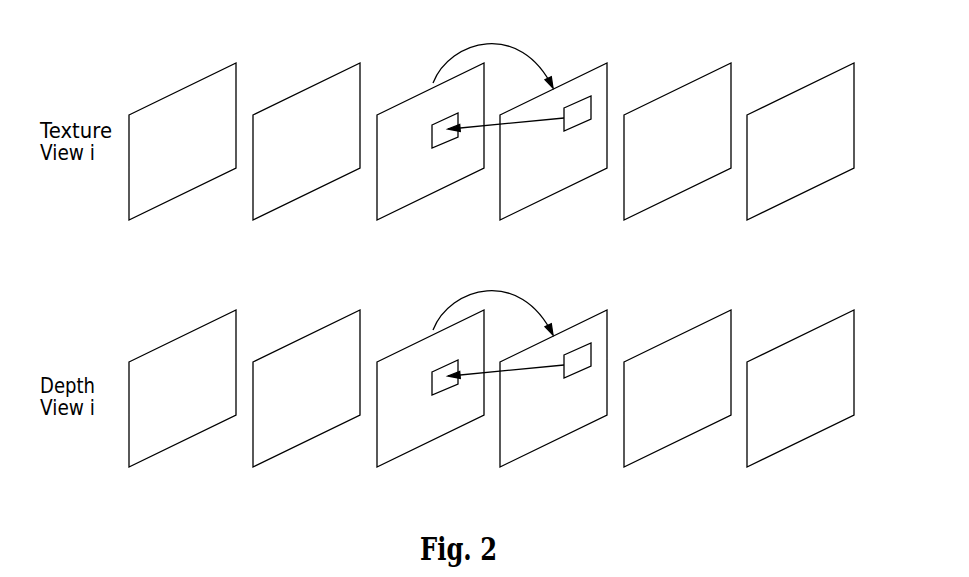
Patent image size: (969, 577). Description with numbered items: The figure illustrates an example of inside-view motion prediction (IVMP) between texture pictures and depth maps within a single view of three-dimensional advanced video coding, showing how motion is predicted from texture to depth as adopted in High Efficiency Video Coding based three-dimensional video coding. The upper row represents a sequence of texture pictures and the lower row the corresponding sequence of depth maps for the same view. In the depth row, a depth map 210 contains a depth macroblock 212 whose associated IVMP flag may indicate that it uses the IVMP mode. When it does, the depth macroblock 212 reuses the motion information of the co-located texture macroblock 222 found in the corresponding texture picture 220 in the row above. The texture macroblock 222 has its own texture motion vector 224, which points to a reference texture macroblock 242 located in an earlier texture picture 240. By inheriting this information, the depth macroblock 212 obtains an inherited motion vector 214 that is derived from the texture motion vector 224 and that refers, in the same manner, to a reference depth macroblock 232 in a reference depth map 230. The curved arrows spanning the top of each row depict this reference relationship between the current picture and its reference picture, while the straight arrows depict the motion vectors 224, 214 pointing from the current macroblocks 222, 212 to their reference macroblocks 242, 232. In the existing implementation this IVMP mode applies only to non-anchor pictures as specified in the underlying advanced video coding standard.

The depth map 210 is at (557, 440).
The depth macroblock 212 is at (591, 359).
The inherited motion vector 214 is at (517, 370).
The corresponding texture picture 220 is at (557, 193).
The co-located texture macroblock 222 is at (591, 112).
The texture motion vector 224 is at (517, 123).
The reference depth map 230 is at (432, 440).
The reference depth macroblock 232 is at (446, 365).
The reference texture picture 240 is at (432, 193).
The reference texture macroblock 242 is at (445, 118).